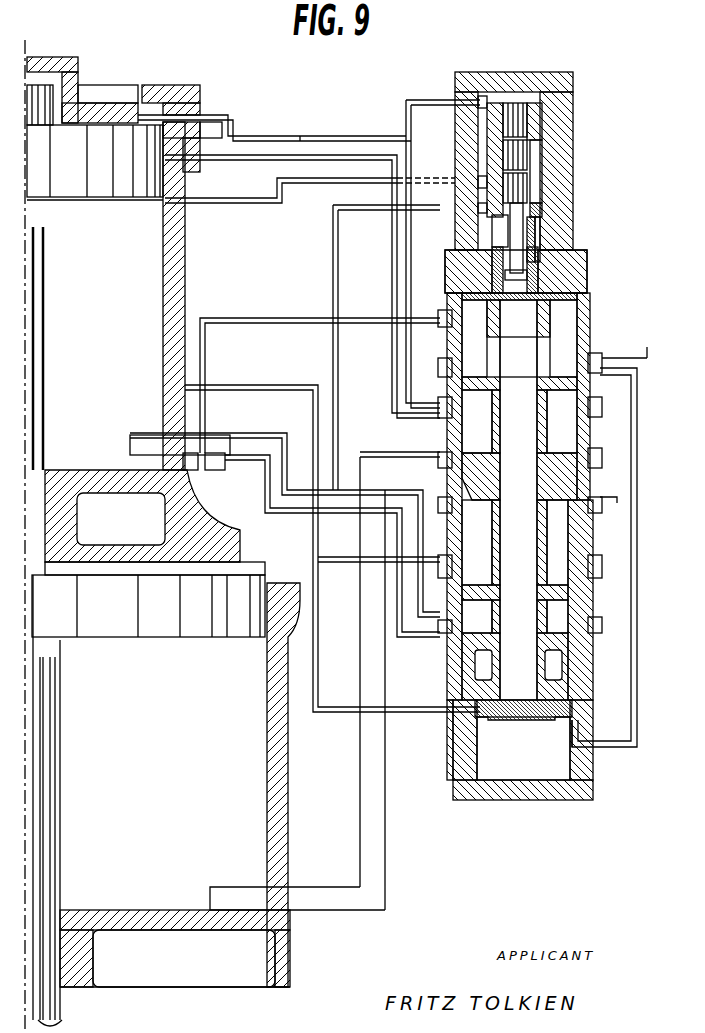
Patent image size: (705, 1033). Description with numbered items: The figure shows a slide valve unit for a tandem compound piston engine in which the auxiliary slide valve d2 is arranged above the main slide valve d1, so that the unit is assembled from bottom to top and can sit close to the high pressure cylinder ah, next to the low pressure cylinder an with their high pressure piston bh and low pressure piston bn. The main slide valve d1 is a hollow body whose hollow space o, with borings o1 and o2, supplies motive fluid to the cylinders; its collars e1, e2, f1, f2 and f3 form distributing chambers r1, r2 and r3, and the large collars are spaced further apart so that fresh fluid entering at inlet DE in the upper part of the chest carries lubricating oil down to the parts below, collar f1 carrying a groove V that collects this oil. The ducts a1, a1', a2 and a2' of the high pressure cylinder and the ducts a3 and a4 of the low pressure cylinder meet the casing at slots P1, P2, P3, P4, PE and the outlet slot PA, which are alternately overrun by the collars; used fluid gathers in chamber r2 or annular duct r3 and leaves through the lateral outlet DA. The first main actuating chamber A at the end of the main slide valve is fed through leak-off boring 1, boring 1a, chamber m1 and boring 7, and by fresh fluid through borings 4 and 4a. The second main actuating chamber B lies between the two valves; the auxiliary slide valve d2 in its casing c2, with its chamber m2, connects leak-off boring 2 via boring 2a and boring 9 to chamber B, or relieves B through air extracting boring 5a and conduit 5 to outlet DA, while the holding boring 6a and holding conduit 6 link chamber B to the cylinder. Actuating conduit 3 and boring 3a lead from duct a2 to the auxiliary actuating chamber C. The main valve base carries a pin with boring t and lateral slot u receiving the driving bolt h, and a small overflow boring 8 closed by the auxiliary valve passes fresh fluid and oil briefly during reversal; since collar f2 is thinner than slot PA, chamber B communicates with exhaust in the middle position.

The leak-off boring 1 is at (245, 385).
The leak-off boring 1a is at (462, 729).
The leak-off boring 2 is at (243, 200).
The boring in auxiliary slide valve chest 2a is at (480, 176).
The actuating conduit 3 is at (408, 100).
The boring 3a is at (478, 96).
The fresh motive fluid regulating boring 4 is at (637, 580).
The fresh motive fluid regulating boring 4a is at (580, 718).
The air extracting conduit 5 is at (338, 252).
The air extracting boring 5a is at (480, 203).
The holding conduit 6 is at (245, 318).
The motive fluid holding boring 6a is at (447, 310).
The boring in main slide valve 7 is at (478, 692).
The overflow boring 8 is at (530, 222).
The boring in auxiliary slide valve 9 is at (535, 197).
The first main actuating chamber A is at (555, 768).
The second main actuating chamber B is at (587, 277).
The auxiliary actuating chamber C is at (573, 100).
The motive fluid inlet DE is at (700, 364).
The outlet DA is at (685, 517).
The slot PE is at (410, 368).
The outlet slot PA is at (460, 483).
The slot P1 is at (411, 409).
The slot P2 is at (441, 641).
The slot P3 is at (406, 450).
The slot P4 is at (441, 583).
The groove V is at (480, 378).
The hollow space o is at (504, 421).
The boring o1 is at (543, 367).
The boring o2 is at (545, 616).
The collar e1 is at (480, 644).
The collar e2 is at (565, 303).
The distributing collar f1 is at (470, 387).
The distributing collar f2 is at (480, 589).
The collar f3 is at (560, 492).
The distributing chamber r1 is at (563, 338).
The distributing chamber r2 is at (557, 542).
The annular duct r3 is at (562, 421).
The main slide valve d1 is at (545, 542).
The auxiliary slide valve d2 is at (530, 128).
The auxiliary slide valve casing c2 is at (545, 152).
The main slide valve chamber m1 is at (480, 662).
The auxiliary slide valve chamber m2 is at (532, 176).
The lateral slot u is at (505, 224).
The driving bolt h is at (517, 258).
The boring t is at (525, 257).
The duct a1 is at (298, 132).
The duct a1' is at (274, 127).
The duct a2 is at (285, 512).
The duct a2' is at (322, 545).
The cylinder duct a3 is at (340, 898).
The low pressure cylinder duct a4 is at (337, 573).
The high pressure cylinder ah is at (175, 303).
The low pressure cylinder an is at (272, 740).
The high pressure piston bh is at (125, 183).
The low pressure piston bn is at (218, 627).